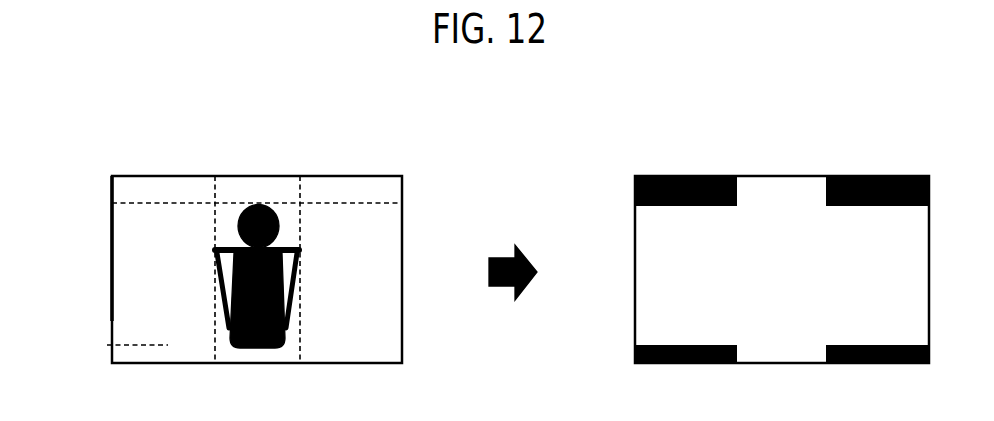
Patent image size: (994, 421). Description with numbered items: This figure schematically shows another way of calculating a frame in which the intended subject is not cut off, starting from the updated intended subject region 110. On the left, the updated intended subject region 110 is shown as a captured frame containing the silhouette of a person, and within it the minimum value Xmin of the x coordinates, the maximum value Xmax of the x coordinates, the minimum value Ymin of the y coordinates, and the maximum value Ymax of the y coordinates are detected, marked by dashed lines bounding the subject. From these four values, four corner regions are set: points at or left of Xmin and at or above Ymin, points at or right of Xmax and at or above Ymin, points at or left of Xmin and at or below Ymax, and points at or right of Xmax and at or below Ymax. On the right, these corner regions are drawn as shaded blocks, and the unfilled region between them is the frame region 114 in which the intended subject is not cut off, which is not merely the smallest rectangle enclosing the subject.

The updated intended subject region 110 is at (400, 148).
The frame region in which the intended subject is not cut off 114 is at (852, 147).
The minimum value of the x coordinates Xmin is at (202, 245).
The maximum value of the x coordinates Xmax is at (332, 245).
The minimum value of the y coordinates Ymin is at (224, 205).
The maximum value of the y coordinates Ymax is at (107, 340).